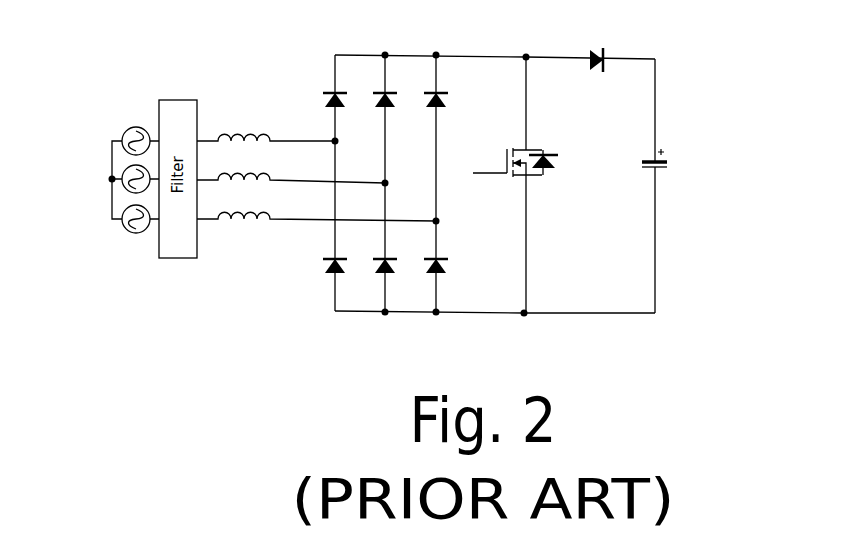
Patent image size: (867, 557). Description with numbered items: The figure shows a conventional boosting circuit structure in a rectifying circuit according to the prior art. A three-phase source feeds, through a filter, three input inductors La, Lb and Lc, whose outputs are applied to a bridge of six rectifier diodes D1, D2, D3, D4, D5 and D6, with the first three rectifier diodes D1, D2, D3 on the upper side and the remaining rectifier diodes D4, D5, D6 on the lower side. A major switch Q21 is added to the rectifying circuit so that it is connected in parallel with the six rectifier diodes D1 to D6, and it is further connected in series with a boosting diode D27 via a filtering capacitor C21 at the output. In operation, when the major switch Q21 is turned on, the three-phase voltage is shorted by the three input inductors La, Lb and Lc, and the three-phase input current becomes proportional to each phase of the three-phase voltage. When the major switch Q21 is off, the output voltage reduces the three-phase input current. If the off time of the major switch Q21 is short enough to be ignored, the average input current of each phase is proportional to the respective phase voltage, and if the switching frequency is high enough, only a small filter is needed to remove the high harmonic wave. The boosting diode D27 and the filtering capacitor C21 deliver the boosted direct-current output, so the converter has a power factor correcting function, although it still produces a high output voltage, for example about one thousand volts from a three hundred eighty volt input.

The input inductor La is at (266, 127).
The input inductor Lb is at (291, 168).
The input inductor Lc is at (316, 206).
The rectifier diode D1 is at (328, 89).
The rectifier diode D2 is at (378, 89).
The rectifier diode D3 is at (429, 89).
The rectifier diode D4 is at (328, 256).
The rectifier diode D5 is at (378, 256).
The rectifier diode D6 is at (429, 256).
The major switch Q21 is at (514, 162).
The boosting diode D27 is at (605, 48).
The filtering capacitor C21 is at (671, 147).